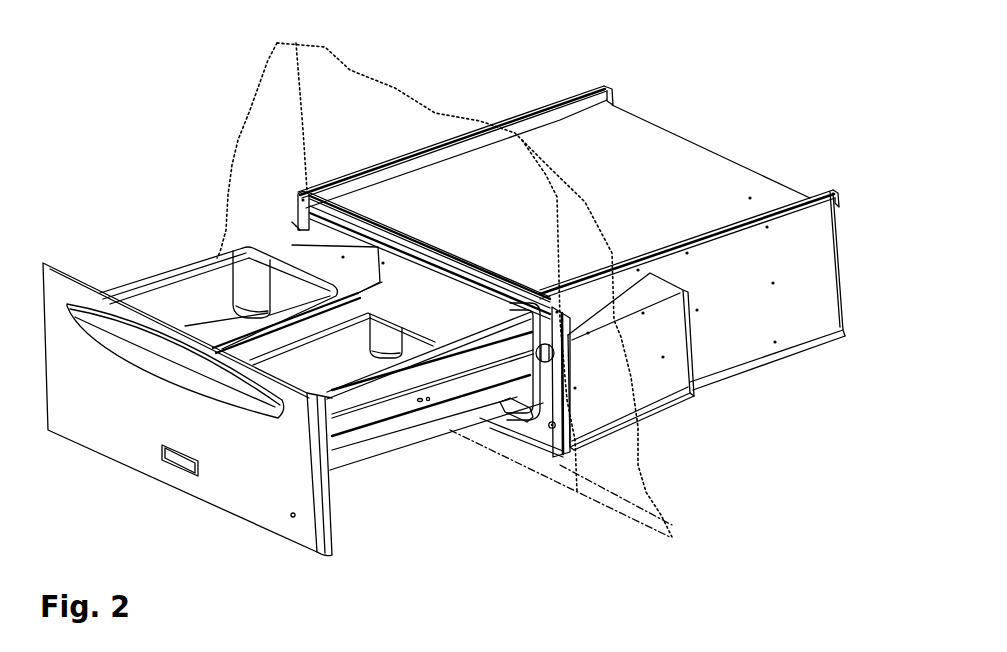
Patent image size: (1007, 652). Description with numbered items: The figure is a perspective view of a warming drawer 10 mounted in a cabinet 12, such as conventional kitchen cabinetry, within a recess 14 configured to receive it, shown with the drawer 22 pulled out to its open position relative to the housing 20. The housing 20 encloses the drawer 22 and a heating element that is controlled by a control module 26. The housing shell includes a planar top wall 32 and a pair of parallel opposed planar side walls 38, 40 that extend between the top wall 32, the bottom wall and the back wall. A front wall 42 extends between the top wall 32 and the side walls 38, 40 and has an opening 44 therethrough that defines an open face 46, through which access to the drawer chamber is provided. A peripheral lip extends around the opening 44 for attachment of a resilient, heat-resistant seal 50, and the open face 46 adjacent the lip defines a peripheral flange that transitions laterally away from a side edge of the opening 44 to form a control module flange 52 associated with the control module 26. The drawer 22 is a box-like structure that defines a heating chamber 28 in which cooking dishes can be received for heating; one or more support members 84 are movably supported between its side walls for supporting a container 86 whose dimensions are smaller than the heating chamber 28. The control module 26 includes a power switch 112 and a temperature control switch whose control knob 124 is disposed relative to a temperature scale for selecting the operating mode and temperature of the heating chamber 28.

The warming drawer 10 is at (293, 390).
The cabinet 12 is at (626, 456).
The recess 14 is at (692, 294).
The housing 20 is at (544, 295).
The drawer 22 is at (423, 437).
The control module 26 is at (675, 405).
The heating chamber 28 is at (434, 292).
The top wall 32 is at (638, 130).
The side wall 38 is at (820, 220).
The side wall 40 is at (580, 105).
The front wall 42 is at (544, 378).
The opening 44 is at (499, 420).
The open face 46 is at (297, 226).
The seal 50 is at (293, 222).
The control module flange 52 is at (543, 432).
The support member 84 is at (263, 242).
The container 86 is at (155, 302).
The power switch 112 is at (552, 430).
The control knob 124 is at (566, 369).